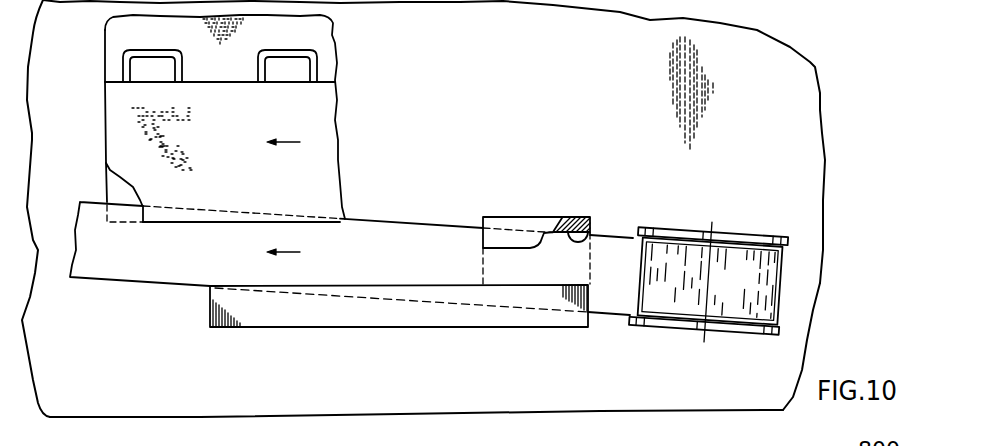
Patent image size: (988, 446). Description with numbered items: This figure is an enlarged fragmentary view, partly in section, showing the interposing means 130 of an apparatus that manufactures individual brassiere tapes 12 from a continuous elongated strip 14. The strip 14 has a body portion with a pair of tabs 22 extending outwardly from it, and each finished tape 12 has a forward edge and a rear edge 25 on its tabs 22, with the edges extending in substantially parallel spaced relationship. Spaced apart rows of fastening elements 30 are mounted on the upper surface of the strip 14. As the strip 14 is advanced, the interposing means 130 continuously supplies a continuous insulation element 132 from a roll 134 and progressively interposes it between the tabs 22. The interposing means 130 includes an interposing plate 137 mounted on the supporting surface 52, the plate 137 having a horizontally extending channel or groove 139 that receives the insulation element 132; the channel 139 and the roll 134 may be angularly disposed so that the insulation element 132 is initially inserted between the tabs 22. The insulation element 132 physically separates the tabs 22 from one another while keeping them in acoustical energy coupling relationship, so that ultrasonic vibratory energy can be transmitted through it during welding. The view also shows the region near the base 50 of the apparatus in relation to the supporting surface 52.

The tape 12 is at (337, 39).
The fastening elements 30 is at (322, 63).
The interposing means 130 is at (500, 160).
The tabs 22 is at (100, 182).
The insulation element 132 is at (88, 265).
The rear edge 25 is at (146, 263).
The interposing plate 137 is at (312, 327).
The channel 139 is at (587, 238).
The strip 14 is at (609, 324).
The roll 134 is at (730, 230).
The base plate 50 is at (346, 417).
The supporting surface 52 is at (710, 392).